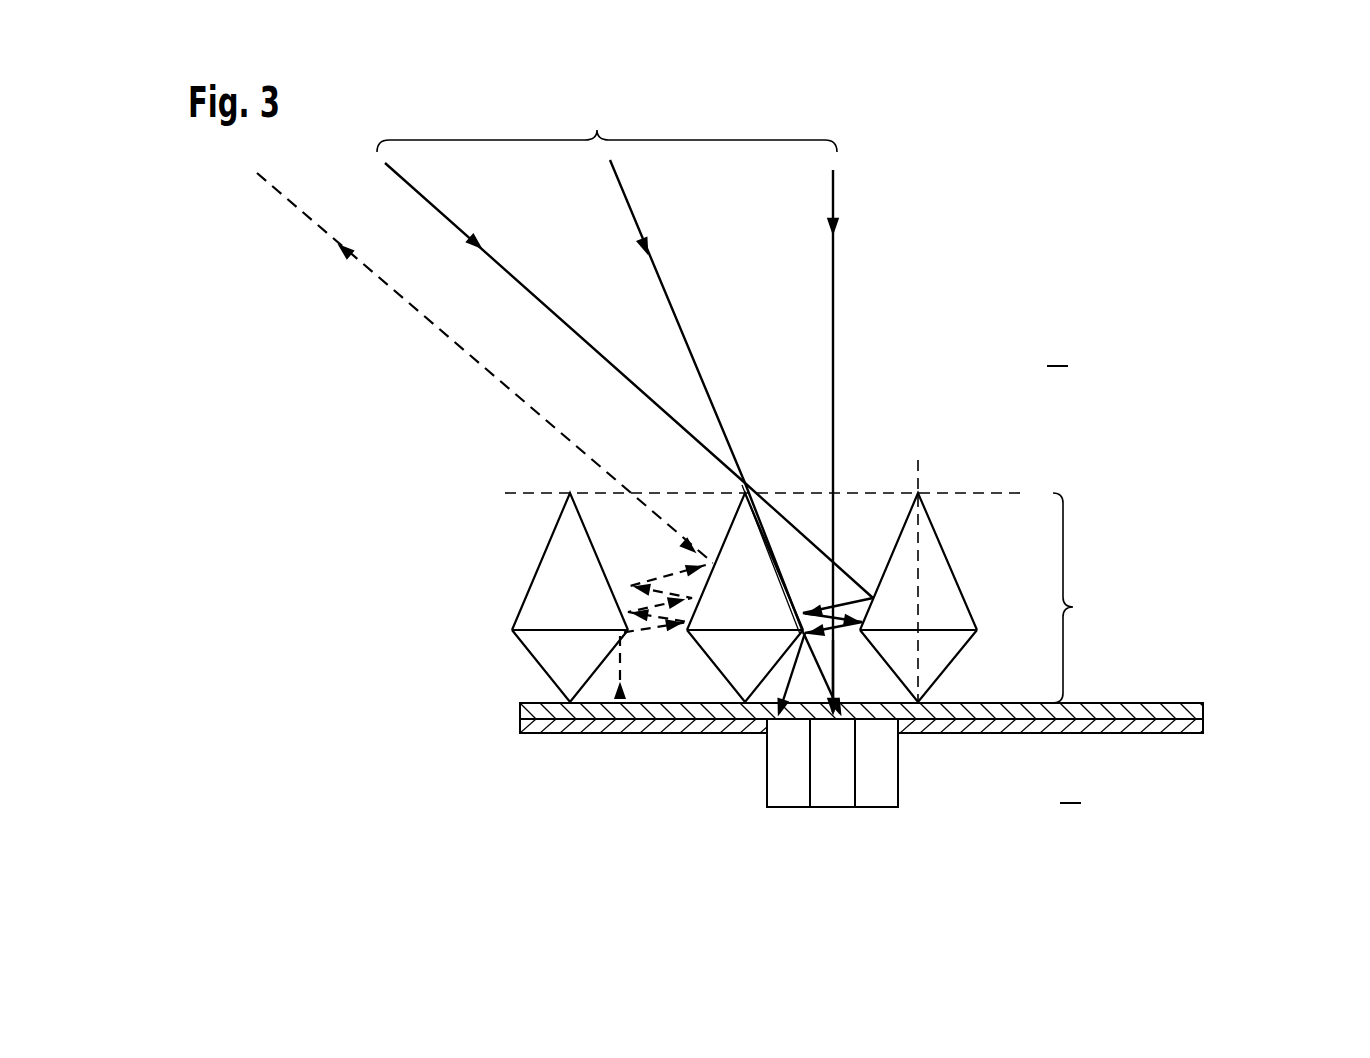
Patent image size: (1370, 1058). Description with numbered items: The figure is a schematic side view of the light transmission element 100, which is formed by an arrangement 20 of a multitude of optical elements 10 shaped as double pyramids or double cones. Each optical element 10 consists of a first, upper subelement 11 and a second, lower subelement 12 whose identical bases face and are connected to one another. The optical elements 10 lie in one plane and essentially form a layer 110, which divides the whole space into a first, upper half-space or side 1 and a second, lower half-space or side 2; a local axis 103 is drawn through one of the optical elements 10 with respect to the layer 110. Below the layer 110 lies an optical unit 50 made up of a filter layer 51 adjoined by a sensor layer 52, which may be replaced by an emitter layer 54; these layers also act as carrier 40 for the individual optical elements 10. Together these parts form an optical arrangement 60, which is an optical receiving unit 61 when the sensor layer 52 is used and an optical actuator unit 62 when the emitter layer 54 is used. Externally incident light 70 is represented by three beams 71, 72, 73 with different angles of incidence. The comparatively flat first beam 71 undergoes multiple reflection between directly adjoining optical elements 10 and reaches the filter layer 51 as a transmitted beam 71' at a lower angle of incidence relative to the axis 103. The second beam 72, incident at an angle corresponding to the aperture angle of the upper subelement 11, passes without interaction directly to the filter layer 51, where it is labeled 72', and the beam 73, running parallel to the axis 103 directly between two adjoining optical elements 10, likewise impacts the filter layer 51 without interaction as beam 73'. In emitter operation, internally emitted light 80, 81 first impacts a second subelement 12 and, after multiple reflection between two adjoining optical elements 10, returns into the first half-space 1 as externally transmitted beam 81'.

The first half-space 1 is at (1057, 350).
The second half-space 2 is at (1070, 787).
The optical element 10 is at (745, 623).
The first subelement 11 is at (548, 582).
The second subelement 12 is at (555, 660).
The arrangement 20 is at (705, 623).
The carrier 40 is at (847, 726).
The optical unit 50 is at (887, 716).
The filter layer 51 is at (1200, 712).
The sensor layer 52 is at (916, 736).
The emitter layer 54 is at (1200, 727).
The optical arrangement 60 is at (1017, 599).
The optical receiving unit 61 is at (1017, 599).
The optical actuator unit 62 is at (1113, 457).
The externally incident light 70 is at (642, 405).
The first beam 71 is at (629, 399).
The second beam 72 is at (706, 397).
The beam 73 is at (868, 441).
The first deflected ray 71' is at (754, 714).
The second deflected ray 72' is at (825, 750).
The third transmitted ray 73' is at (900, 718).
The return beam 80 is at (637, 679).
The light beam 81 is at (637, 679).
The externally transmitted beam 81' is at (485, 368).
The light transmission element 100 is at (397, 504).
The local axis 103 is at (912, 466).
The layer 110 is at (1090, 598).